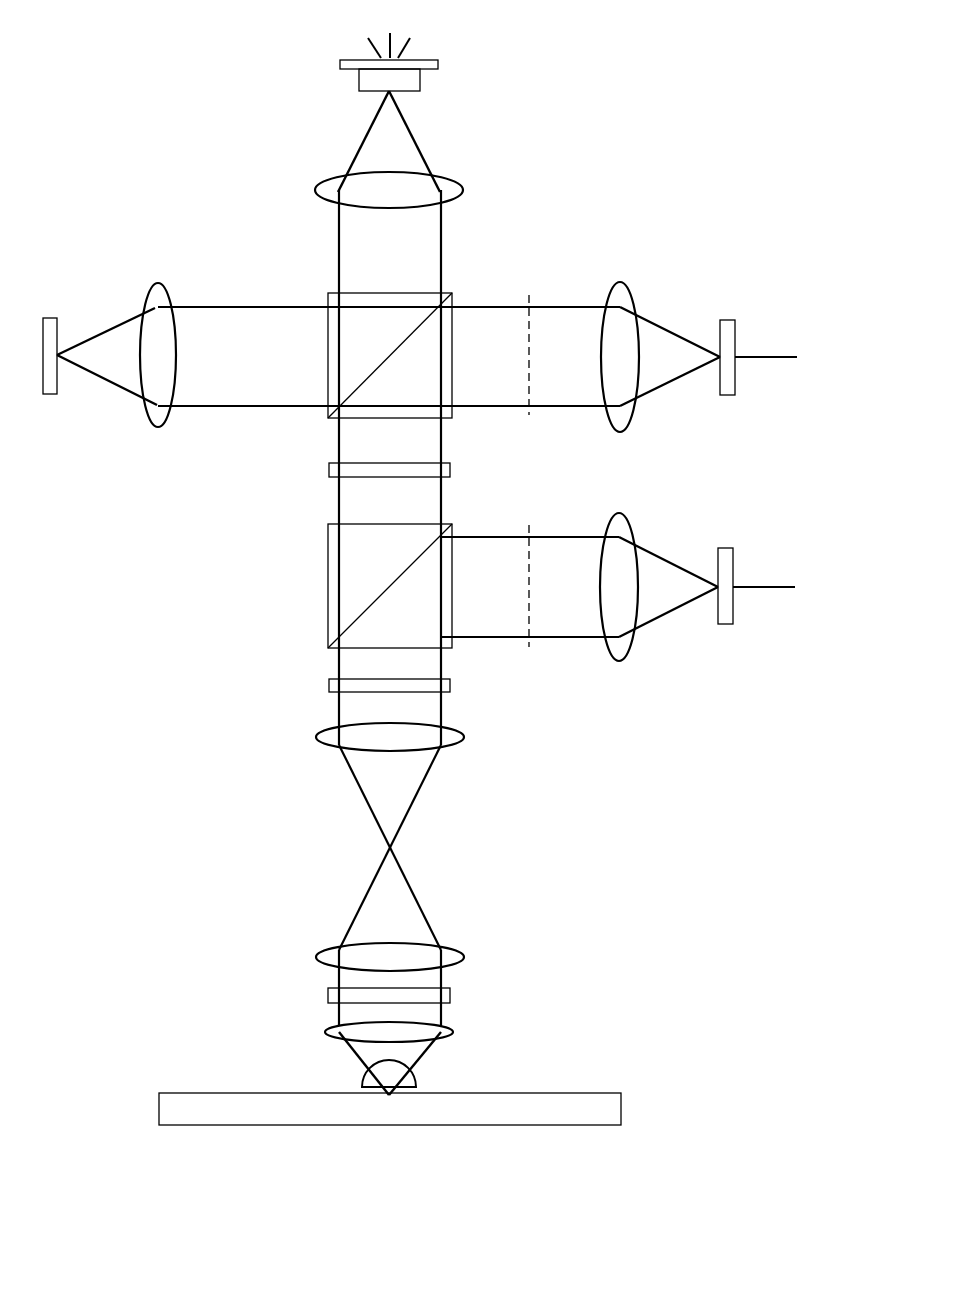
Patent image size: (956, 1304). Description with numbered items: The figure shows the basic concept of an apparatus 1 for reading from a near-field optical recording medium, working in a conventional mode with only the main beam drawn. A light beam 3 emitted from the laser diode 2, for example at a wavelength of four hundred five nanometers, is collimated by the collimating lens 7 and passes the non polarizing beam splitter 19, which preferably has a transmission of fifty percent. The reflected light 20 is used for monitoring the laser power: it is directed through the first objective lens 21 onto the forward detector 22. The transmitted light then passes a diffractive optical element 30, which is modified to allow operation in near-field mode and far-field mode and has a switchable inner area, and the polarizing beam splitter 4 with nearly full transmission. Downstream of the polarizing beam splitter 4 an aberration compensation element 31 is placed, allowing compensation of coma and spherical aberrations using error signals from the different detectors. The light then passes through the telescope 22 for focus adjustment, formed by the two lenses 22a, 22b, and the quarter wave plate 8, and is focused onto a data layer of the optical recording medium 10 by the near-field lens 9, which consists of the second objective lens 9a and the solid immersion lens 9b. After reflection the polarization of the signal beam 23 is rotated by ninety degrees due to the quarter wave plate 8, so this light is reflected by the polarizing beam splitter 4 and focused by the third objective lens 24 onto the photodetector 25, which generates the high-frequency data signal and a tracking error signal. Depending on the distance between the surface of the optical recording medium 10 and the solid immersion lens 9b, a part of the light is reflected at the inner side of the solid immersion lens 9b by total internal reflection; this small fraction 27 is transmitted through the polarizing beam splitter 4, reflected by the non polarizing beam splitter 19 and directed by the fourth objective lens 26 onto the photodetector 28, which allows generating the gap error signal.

The apparatus 1 is at (195, 187).
The laser diode 2 is at (424, 53).
The light beam 3 is at (418, 148).
The polarizing beam splitter 4 is at (326, 522).
The collimating lens 7 is at (318, 183).
The quarter wave plate 8 is at (401, 1020).
The near-field lens 9 is at (416, 1046).
The second objective lens 9a is at (455, 1028).
The solid immersion lens 9b is at (417, 1075).
The optical recording medium 10 is at (250, 1092).
The non polarizing beam splitter 19 is at (453, 292).
The reflected light 20 is at (263, 302).
The first objective lens 21 is at (157, 428).
The forward detector 22 is at (55, 312).
The telescope lens 22a is at (465, 737).
The telescope lens 22b is at (463, 943).
The signal beam 23 is at (443, 978).
The third objective lens 24 is at (622, 512).
The photodetector 25 is at (725, 628).
The fourth objective lens 26 is at (625, 283).
The small fraction of the returning reading light beam 27 is at (660, 320).
The photodetector 28 is at (737, 327).
The diffractive optical element 30 is at (452, 470).
The aberration compensation element 31 is at (327, 685).